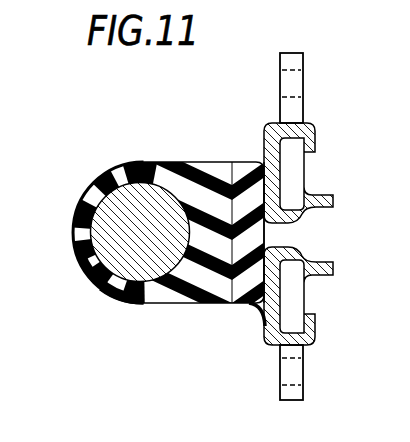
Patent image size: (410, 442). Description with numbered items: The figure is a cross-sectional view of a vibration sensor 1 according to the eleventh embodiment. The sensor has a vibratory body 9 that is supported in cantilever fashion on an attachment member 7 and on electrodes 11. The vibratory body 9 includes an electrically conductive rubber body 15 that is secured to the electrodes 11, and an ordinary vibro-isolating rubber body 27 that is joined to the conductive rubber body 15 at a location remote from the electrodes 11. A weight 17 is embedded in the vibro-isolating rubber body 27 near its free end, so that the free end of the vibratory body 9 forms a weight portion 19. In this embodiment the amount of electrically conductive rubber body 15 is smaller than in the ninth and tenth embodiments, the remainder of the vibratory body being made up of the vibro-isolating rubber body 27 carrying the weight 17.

The seal assembly 1 is at (111, 149).
The attachment member 7 is at (304, 113).
The vibratory body 9 is at (144, 162).
The electrodes 11 is at (317, 143).
The electrically conductive rubber body 15 is at (248, 291).
The weight 17 is at (153, 202).
The weight portion 19 is at (81, 263).
The vibro-isolating rubber body 27 is at (132, 296).